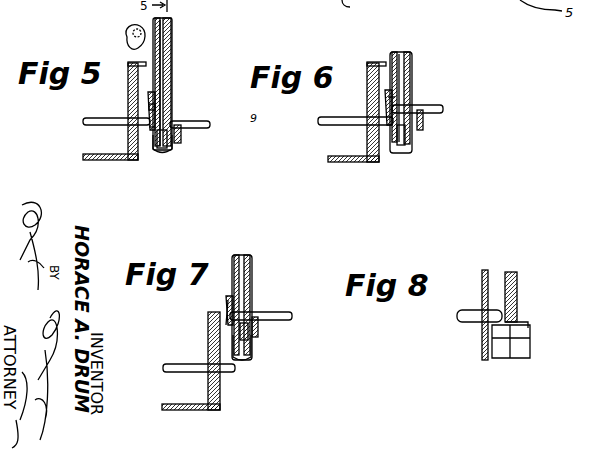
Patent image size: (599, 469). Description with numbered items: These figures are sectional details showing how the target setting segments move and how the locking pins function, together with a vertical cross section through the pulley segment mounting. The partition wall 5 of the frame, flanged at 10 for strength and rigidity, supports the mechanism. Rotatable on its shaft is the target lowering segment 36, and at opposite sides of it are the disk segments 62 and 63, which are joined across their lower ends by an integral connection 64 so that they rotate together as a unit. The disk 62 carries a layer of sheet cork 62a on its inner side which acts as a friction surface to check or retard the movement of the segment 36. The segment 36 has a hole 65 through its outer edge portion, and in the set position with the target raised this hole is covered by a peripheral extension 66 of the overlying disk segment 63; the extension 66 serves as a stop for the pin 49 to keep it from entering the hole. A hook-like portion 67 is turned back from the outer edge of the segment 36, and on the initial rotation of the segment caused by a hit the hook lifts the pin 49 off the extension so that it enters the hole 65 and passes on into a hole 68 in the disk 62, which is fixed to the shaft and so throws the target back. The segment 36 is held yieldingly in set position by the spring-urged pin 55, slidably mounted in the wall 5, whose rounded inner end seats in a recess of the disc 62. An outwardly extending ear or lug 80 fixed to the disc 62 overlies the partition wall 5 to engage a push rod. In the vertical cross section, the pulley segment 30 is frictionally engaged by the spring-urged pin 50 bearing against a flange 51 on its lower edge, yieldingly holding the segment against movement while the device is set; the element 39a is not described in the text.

In FIG. 5, the partition wall 5 is at (128, 135).
In FIG. 6, the partition wall 5 is at (367, 135).
In FIG. 7, the partition wall 5 is at (208, 386).
In FIG. 5, the flange 10 is at (147, 62).
In FIG. 6, the flange 10 is at (383, 62).
In FIG. 7, the flange 10 is at (180, 411).
In FIG. 8, the pulley segment 30 is at (518, 292).
In FIG. 5, the target lowering segment 36 is at (166, 75).
In FIG. 6, the target lowering segment 36 is at (412, 75).
In FIG. 7, the target lowering segment 36 is at (252, 272).
In FIG. 6, the connector 39a is at (350, 7).
In FIG. 5, the pin 49 is at (211, 125).
In FIG. 6, the pin 49 is at (443, 108).
In FIG. 7, the pin 49 is at (292, 317).
In FIG. 8, the pin 50 is at (462, 316).
In FIG. 8, the flange 51 is at (483, 343).
In FIG. 5, the pin 55 is at (100, 123).
In FIG. 6, the pin 55 is at (350, 118).
In FIG. 7, the pin 55 is at (196, 364).
In FIG. 5, the disk segment 62 is at (173, 30).
In FIG. 6, the disk segment 62 is at (412, 60).
In FIG. 7, the disk segment 62 is at (252, 258).
In FIG. 5, the sheet cork layer 62a is at (166, 48).
In FIG. 6, the sheet cork layer 62a is at (413, 145).
In FIG. 7, the sheet cork layer 62a is at (227, 300).
In FIG. 5, the disk segment 63 is at (167, 97).
In FIG. 6, the disk segment 63 is at (413, 90).
In FIG. 7, the disk segment 63 is at (252, 295).
In FIG. 5, the integral connection 64 is at (165, 151).
In FIG. 6, the integral connection 64 is at (400, 154).
In FIG. 7, the integral connection 64 is at (248, 360).
In FIG. 5, the hole 65 is at (152, 130).
In FIG. 6, the hole 65 is at (413, 97).
In FIG. 5, the peripheral extension 66 is at (182, 136).
In FIG. 7, the peripheral extension 66 is at (250, 341).
In FIG. 5, the hook-like portion 67 is at (181, 143).
In FIG. 6, the hook-like portion 67 is at (421, 131).
In FIG. 7, the hook-like portion 67 is at (258, 333).
In FIG. 5, the hole 68 is at (153, 107).
In FIG. 5, the ear or lug 80 is at (127, 36).